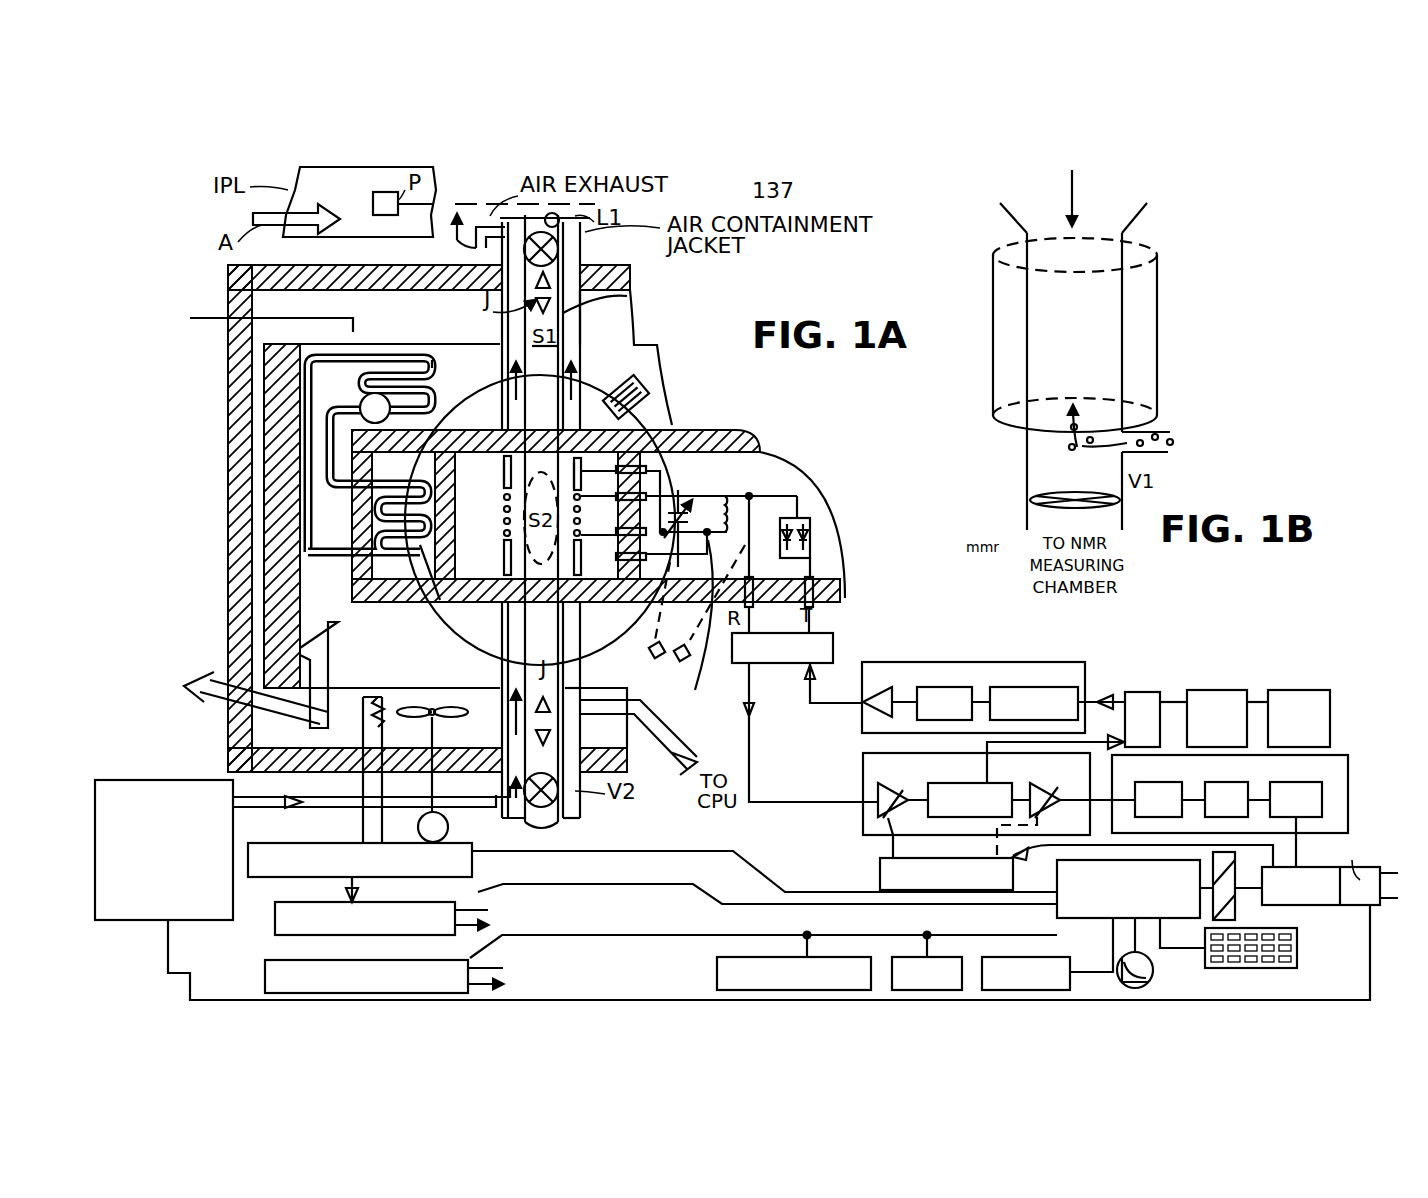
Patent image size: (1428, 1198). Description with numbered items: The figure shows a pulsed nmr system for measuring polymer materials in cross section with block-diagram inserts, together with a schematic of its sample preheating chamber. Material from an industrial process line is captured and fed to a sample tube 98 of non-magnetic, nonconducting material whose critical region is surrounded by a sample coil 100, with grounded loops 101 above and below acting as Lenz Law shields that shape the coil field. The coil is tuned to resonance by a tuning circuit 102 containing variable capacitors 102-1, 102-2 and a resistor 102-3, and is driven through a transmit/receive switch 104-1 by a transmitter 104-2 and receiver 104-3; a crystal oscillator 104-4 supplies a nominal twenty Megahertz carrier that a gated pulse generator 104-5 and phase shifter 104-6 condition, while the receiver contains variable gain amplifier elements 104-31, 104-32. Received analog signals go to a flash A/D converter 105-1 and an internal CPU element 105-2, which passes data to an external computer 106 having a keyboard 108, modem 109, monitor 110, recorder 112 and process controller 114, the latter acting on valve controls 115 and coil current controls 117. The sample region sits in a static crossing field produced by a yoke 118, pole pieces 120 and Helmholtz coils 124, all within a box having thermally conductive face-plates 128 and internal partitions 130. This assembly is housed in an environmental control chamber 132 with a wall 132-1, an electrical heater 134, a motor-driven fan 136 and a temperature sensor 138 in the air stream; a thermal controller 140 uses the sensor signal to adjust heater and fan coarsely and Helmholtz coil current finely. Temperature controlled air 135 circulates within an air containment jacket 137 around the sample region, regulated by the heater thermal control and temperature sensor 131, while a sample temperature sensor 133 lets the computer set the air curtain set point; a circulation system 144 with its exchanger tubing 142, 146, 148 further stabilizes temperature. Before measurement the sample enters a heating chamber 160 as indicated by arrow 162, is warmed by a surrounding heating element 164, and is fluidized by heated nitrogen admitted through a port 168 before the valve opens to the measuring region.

In FIG. 1A, the tube 98 is at (627, 296).
In FIG. 1A, the sample coil 100 is at (500, 492).
In FIG. 1A, the grounded loops 101 is at (503, 462).
In FIG. 1A, the tuning circuit 102 is at (733, 480).
In FIG. 1A, the variable capacitor 102-1 is at (672, 490).
In FIG. 1A, the variable capacitor 102-2 is at (748, 484).
In FIG. 1A, the resistor 102-3 is at (748, 710).
In FIG. 1A, the transmit/receive switch 104-1 is at (833, 648).
In FIG. 1A, the transmitter 104-2 is at (870, 718).
In FIG. 1A, the receiver 104-3 is at (863, 795).
In FIG. 1A, the variable gain amplifier element 104-31 is at (888, 836).
In FIG. 1A, the variable gain amplifier element 104-32 is at (1031, 808).
In FIG. 1A, the crystal oscillator 104-4 is at (1285, 690).
In FIG. 1A, the gated pulse generator 104-5 is at (1222, 690).
In FIG. 1A, the phase shifter 104-6 is at (1147, 692).
In FIG. 1A, the flash A/D converter 105-1 is at (1352, 757).
In FIG. 1A, the CPU element 105-2 is at (1289, 905).
In FIG. 1A, the external computer 106 is at (1092, 919).
In FIG. 1A, the keyboard 108 is at (1270, 968).
In FIG. 1A, the modem 109 is at (1105, 935).
In FIG. 1A, the monitor 110 is at (1158, 953).
In FIG. 1A, the recorder 112 is at (933, 935).
In FIG. 1A, the process controller 114 is at (715, 976).
In FIG. 1A, the valve controls 115 is at (265, 970).
In FIG. 1A, the coil current generator 117 is at (275, 926).
In FIG. 1A, the yoke 118 is at (290, 360).
In FIG. 1A, the pole pieces 120 is at (648, 414).
In FIG. 1A, the Helmholtz coils 124 is at (650, 390).
In FIG. 1A, the face-plates 128 is at (408, 474).
In FIG. 1A, the internal partitions 130 is at (440, 600).
In FIG. 1A, the heater thermal control and temperature sensor 131 is at (160, 920).
In FIG. 1A, the environmental control chamber 132 is at (330, 275).
In FIG. 1A, the outer housing wall 132-1 is at (290, 310).
In FIG. 1A, the temperature sensor 133 is at (566, 688).
In FIG. 1A, the electrical heater 134 is at (380, 698).
In FIG. 1A, the temperature controlled air 135 is at (236, 796).
In FIG. 1A, the fan 136 is at (435, 706).
In FIG. 1A, the air containment jacket 137 is at (576, 820).
In FIG. 1A, the temperature sensor 138 is at (300, 636).
In FIG. 1A, the thermal controller 140 is at (290, 878).
In FIG. 1A, the heat exchanger tube 142 is at (368, 356).
In FIG. 1A, the circulation system 144 is at (362, 400).
In FIG. 1A, the heat exchanger coil 146 is at (432, 358).
In FIG. 1A, the probe heat exchanger coil 148 is at (368, 565).
In FIG. 1B, the heating chamber 160 is at (1098, 356).
In FIG. 1B, the arrow 162 is at (1080, 210).
In FIG. 1B, the heating element 164 is at (1148, 330).
In FIG. 1B, the port 168 is at (1155, 432).